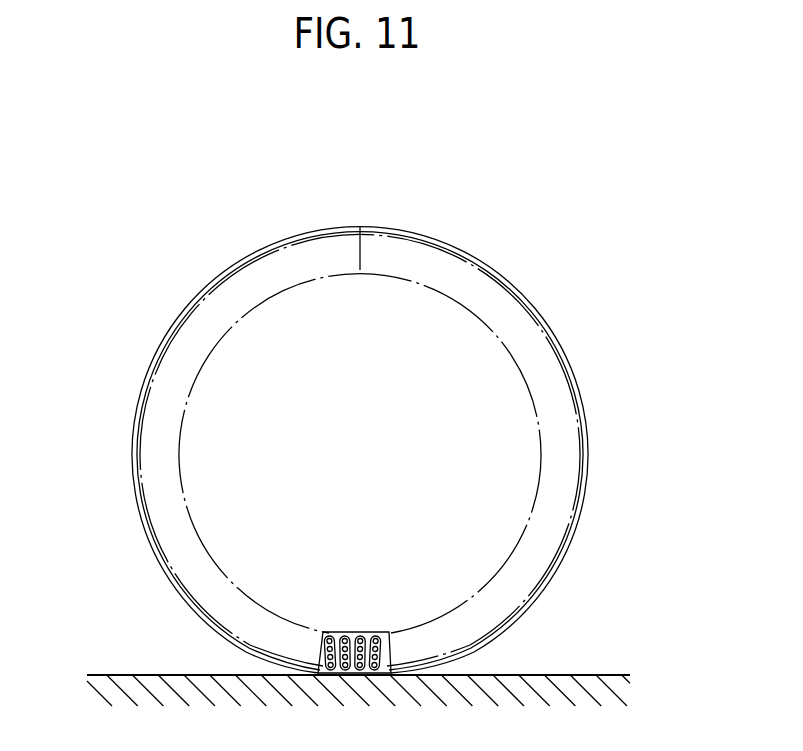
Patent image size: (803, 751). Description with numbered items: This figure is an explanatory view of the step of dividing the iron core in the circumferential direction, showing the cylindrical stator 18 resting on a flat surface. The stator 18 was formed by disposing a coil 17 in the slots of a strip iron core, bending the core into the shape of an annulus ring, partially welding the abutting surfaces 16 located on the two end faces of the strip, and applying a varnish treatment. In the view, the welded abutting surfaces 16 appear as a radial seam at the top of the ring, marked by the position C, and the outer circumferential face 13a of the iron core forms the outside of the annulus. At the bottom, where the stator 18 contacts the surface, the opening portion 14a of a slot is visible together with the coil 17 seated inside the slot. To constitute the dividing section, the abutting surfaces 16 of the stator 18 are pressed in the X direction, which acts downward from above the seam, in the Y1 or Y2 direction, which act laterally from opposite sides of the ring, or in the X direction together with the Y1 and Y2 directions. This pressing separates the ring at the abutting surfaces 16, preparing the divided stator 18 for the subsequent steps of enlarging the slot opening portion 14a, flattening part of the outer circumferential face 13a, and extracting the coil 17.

The outer circumferential face 13a is at (514, 283).
The opening portion 14a is at (350, 632).
The abutting surface 16 is at (363, 257).
The coil 17 is at (391, 633).
The stator 18 is at (394, 450).
The center position C is at (360, 228).
The X direction X is at (360, 198).
The Y1 direction Y1 is at (150, 452).
The Y2 direction Y2 is at (572, 452).